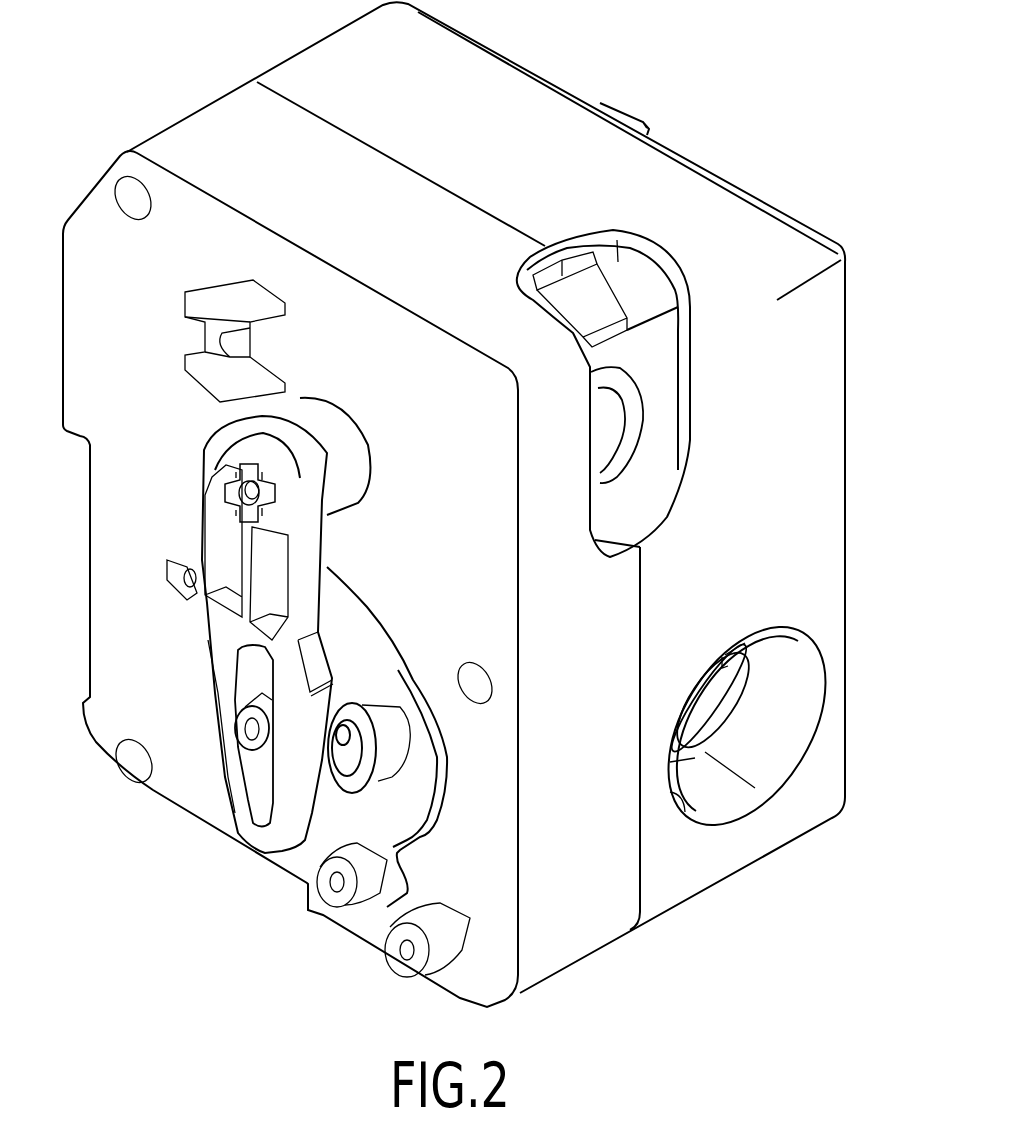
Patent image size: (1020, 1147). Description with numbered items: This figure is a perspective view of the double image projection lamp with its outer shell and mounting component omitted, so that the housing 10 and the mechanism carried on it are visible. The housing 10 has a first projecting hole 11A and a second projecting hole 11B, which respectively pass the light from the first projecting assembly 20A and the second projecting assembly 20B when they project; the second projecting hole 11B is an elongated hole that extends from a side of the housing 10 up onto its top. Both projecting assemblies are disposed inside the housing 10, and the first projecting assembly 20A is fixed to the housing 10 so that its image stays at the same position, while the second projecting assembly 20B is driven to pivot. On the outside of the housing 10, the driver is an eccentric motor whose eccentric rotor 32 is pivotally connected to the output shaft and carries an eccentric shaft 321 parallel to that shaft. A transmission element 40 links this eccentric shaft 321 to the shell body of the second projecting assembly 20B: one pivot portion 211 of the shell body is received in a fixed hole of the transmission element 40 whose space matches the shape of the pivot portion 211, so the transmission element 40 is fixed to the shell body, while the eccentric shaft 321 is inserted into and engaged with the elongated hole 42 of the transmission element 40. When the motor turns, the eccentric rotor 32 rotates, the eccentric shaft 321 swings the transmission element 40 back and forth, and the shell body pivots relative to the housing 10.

The housing 10 is at (260, 57).
The first projecting hole 11A is at (795, 748).
The second projecting hole 11B is at (623, 268).
The first projecting assembly 20A is at (700, 767).
The second projecting assembly 20B is at (632, 473).
The eccentric rotor 32 is at (358, 670).
The transmission element 40 is at (200, 715).
The elongated hole 42 is at (248, 817).
The pivot portion 211 is at (233, 493).
The eccentric shaft 321 is at (247, 740).